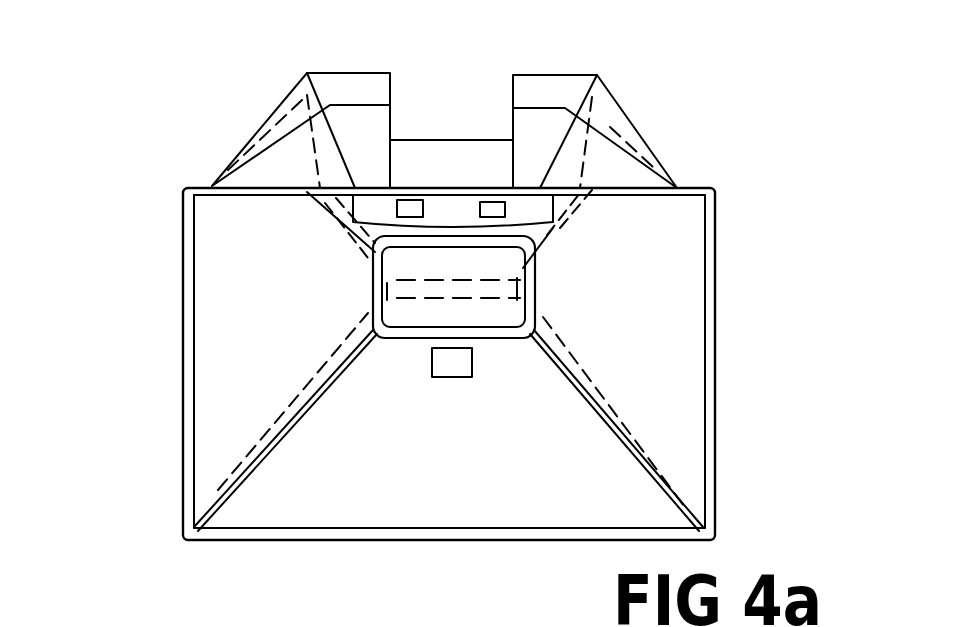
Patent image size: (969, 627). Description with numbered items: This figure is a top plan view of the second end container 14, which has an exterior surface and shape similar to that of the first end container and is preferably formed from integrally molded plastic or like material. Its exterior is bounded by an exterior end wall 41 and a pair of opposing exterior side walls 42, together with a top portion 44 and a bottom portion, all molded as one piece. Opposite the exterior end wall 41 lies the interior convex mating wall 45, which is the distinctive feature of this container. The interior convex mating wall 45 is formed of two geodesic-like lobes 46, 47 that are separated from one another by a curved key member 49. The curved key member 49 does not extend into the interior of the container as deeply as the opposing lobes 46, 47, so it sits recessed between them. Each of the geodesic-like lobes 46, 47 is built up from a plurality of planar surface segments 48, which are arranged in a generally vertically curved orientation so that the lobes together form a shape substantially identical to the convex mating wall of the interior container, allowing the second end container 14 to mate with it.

The second end container 14 is at (145, 175).
The exterior end wall 41 is at (478, 538).
The exterior side walls 42 is at (183, 303).
The top portion 44 is at (528, 232).
The interior convex mating wall 45 is at (313, 55).
The geodesic-like lobe 46 is at (267, 118).
The geodesic-like lobe 47 is at (643, 137).
The planar surface segments 48 is at (362, 90).
The curved key member 49 is at (460, 140).